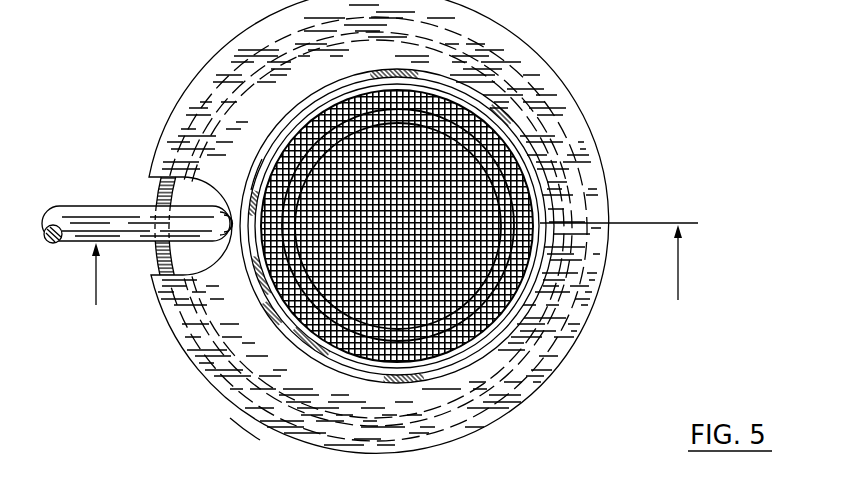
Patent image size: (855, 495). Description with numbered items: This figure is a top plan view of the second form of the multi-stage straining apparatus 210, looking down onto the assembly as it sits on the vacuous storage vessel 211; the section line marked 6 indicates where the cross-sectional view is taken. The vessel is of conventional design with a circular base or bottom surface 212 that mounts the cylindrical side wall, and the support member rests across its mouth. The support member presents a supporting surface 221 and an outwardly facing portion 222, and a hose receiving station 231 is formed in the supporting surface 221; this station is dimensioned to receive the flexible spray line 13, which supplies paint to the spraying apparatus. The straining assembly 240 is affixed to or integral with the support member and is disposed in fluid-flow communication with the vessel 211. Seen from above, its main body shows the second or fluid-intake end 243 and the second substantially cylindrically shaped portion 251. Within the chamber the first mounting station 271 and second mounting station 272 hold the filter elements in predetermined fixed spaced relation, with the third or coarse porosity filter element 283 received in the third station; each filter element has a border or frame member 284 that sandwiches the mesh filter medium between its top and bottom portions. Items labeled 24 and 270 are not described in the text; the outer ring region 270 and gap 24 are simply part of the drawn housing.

The flexible spray line 13 is at (90, 215).
The gap 24 is at (270, 285).
The multi-stage straining apparatus 210 is at (597, 118).
The vacuous storage vessel 211 is at (237, 424).
The circular base or bottom surface 212 is at (207, 383).
The supporting surface 221 is at (240, 114).
The outwardly facing portion 222 is at (216, 323).
The hose receiving station 231 is at (157, 198).
The straining assembly 240 is at (513, 107).
The second or fluid-intake end 243 is at (280, 133).
The second substantially cylindrically shaped portion 251 is at (548, 182).
The housing bottom portion 270 is at (515, 403).
The first mounting station 271 is at (373, 117).
The second mounting station 272 is at (347, 112).
The third or coarse porosity filter element 283 is at (432, 180).
The border or frame member 284 is at (277, 152).
The section line 6- 6 is at (393, 280).